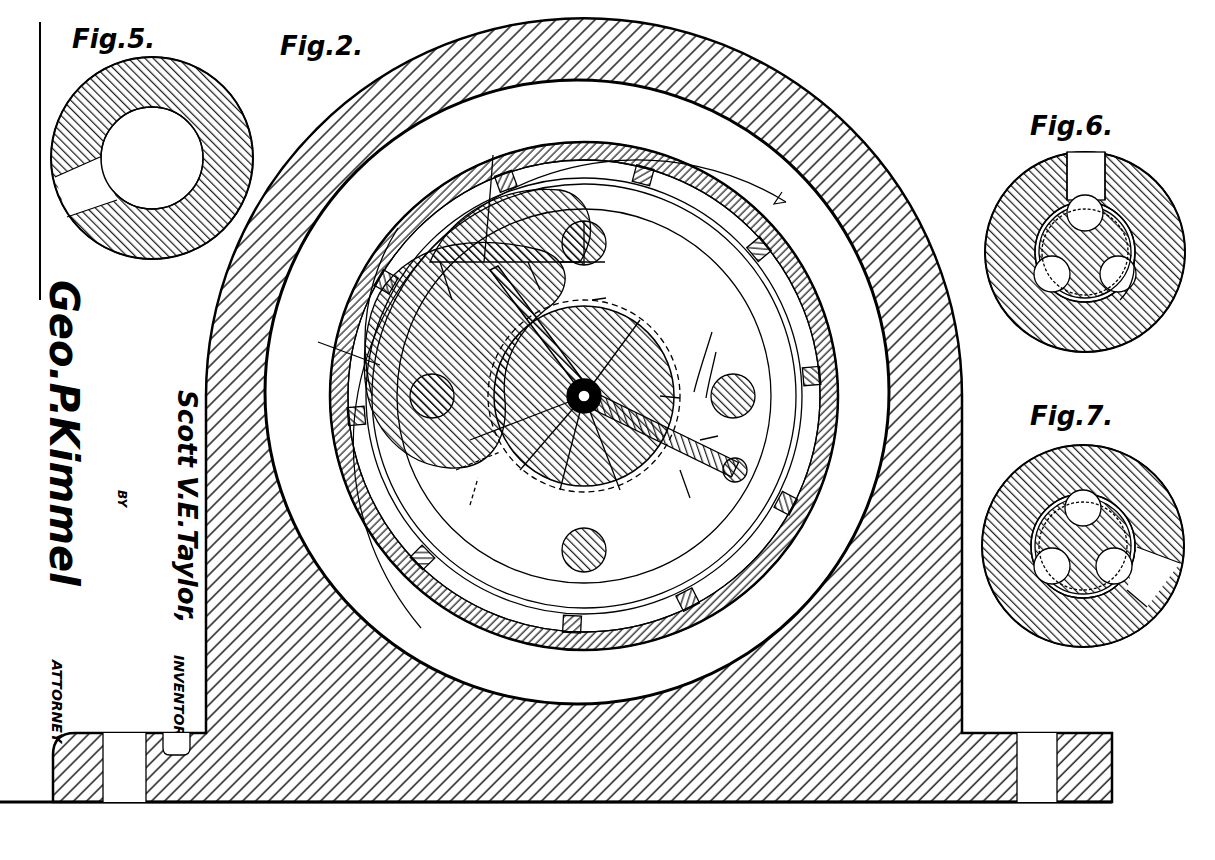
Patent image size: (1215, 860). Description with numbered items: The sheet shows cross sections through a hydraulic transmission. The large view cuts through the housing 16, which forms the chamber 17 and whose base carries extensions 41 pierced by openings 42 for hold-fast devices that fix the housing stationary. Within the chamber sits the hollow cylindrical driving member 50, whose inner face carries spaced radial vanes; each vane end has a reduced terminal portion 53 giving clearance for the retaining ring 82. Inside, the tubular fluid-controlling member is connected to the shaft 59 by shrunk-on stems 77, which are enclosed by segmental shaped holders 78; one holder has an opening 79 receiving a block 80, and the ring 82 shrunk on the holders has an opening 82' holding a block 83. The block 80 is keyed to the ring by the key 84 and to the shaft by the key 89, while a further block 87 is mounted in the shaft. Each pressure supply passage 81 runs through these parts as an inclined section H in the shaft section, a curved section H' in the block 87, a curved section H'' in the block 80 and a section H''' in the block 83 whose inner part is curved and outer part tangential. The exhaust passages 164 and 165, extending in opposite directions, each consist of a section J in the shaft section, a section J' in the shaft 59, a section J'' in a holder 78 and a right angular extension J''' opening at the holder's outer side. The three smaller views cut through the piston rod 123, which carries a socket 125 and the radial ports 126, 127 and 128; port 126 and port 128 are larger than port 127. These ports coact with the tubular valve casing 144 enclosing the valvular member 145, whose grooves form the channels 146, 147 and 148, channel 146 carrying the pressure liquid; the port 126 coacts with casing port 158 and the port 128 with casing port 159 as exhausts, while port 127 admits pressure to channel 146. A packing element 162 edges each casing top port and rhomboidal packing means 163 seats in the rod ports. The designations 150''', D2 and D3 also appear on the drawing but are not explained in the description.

In FIG. 2, the housing 16 is at (824, 158).
In FIG. 2, the chamber 17 is at (856, 284).
In FIG. 2, the extensions 41 is at (88, 738).
In FIG. 2, the openings 42 is at (118, 748).
In FIG. 2, the driving member 50 is at (822, 362).
In FIG. 2, the reduced terminal portion 53 is at (702, 214).
In FIG. 2, the shaft 59 is at (655, 320).
In FIG. 2, the stems 77 is at (604, 252).
In FIG. 2, the segmental shaped holders 78 is at (352, 404).
In FIG. 2, the opening 79 is at (540, 270).
In FIG. 2, the block 80 is at (528, 262).
In FIG. 2, the pressure supply passage 81 is at (440, 262).
In FIG. 2, the retaining ring 82 is at (584, 396).
In FIG. 2, the opening 82' is at (584, 396).
In FIG. 2, the block 83 is at (372, 290).
In FIG. 2, the key 84 is at (452, 262).
In FIG. 2, the block 87 is at (604, 260).
In FIG. 2, the key 89 is at (470, 461).
In FIG. 5, the piston rod 123 is at (174, 165).
In FIG. 2, the piston rod 123 is at (598, 470).
In FIG. 6, the piston rod 123 is at (1160, 220).
In FIG. 7, the piston rod 123 is at (1083, 544).
In FIG. 5, the socket 125 is at (160, 130).
In FIG. 5, the port 126 is at (92, 197).
In FIG. 6, the port 127 is at (1090, 192).
In FIG. 7, the port 128 is at (1155, 580).
In FIG. 2, the valve casing 144 is at (560, 472).
In FIG. 6, the valve casing 144 is at (1045, 225).
In FIG. 7, the valve casing 144 is at (1040, 520).
In FIG. 2, the valvular member 145 is at (645, 350).
In FIG. 6, the valvular member 145 is at (1125, 283).
In FIG. 7, the valvular member 145 is at (1085, 572).
In FIG. 2, the channel 146 is at (606, 340).
In FIG. 6, the channel 146 is at (1040, 170).
In FIG. 7, the channel 146 is at (1080, 512).
In FIG. 2, the channel 147 is at (500, 470).
In FIG. 6, the channel 147 is at (1058, 275).
In FIG. 7, the channel 147 is at (1055, 565).
In FIG. 2, the channel 148 is at (656, 366).
In FIG. 6, the channel 148 is at (1112, 278).
In FIG. 7, the channel 148 is at (1112, 570).
In FIG. 6, the valve stem 150''' is at (1127, 166).
In FIG. 6, the port 158 is at (1043, 268).
In FIG. 6, the port 159 is at (1130, 285).
In FIG. 6, the packing element 162 is at (1040, 245).
In FIG. 6, the packing means 163 is at (1066, 155).
In FIG. 2, the exhaust passage 164 is at (463, 496).
In FIG. 2, the exhaust passage 165 is at (664, 480).
In FIG. 2, the section H is at (556, 331).
In FIG. 2, the section H' is at (582, 237).
In FIG. 2, the section H'' is at (493, 199).
In FIG. 2, the section H''' is at (332, 349).
In FIG. 2, the section J is at (704, 352).
In FIG. 2, the section J' is at (714, 367).
In FIG. 2, the section J'' is at (721, 434).
In FIG. 2, the right angular extension J''' is at (684, 489).
In FIG. 2, the diameter D2 is at (595, 295).
In FIG. 2, the diameter D3 is at (681, 397).